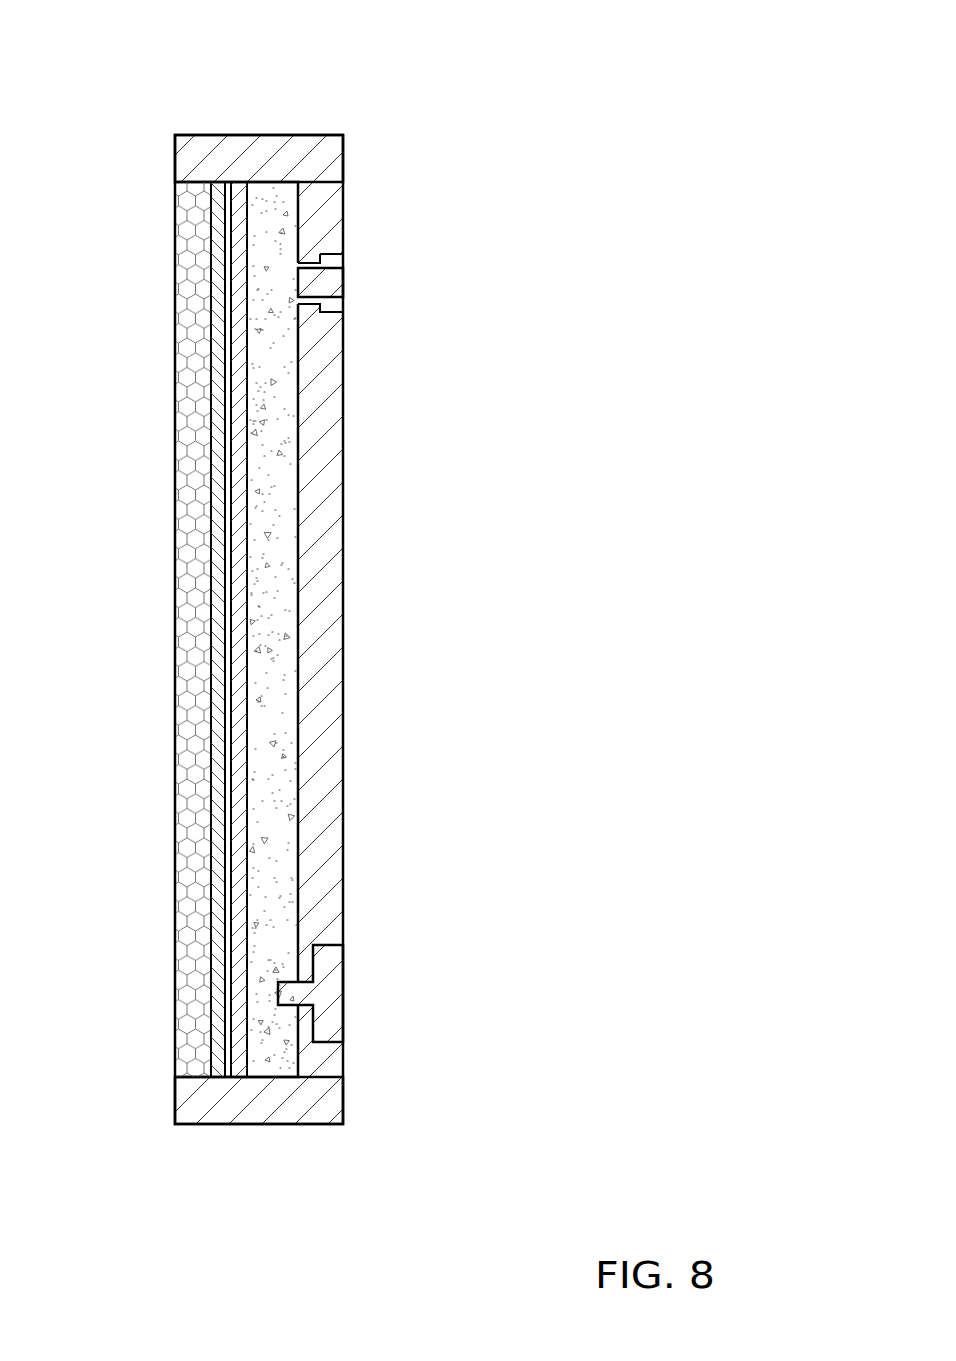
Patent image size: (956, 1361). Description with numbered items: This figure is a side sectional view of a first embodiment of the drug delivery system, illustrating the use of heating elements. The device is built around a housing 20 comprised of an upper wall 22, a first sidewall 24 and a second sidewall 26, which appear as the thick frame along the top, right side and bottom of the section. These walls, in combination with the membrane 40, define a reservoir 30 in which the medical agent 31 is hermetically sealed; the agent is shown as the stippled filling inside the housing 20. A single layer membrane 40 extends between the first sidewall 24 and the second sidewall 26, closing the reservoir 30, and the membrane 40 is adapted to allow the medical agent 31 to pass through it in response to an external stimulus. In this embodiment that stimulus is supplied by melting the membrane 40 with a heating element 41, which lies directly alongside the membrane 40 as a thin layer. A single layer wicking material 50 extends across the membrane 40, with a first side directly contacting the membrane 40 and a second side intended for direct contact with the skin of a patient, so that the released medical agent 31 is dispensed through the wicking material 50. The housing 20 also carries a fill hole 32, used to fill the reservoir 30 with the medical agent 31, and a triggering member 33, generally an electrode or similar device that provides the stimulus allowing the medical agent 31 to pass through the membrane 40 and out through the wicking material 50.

The housing 20 is at (320, 133).
The upper wall 22 is at (345, 468).
The first sidewall 24 is at (236, 135).
The second sidewall 26 is at (260, 1124).
The reservoir 30 is at (298, 607).
The medical agent 31 is at (273, 807).
The fill hole 32 is at (345, 293).
The triggering member 33 is at (330, 995).
The membrane 40 is at (215, 237).
The heating element 41 is at (232, 397).
The wicking material 50 is at (188, 665).